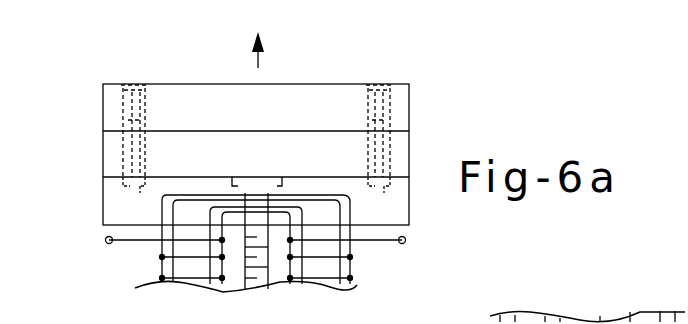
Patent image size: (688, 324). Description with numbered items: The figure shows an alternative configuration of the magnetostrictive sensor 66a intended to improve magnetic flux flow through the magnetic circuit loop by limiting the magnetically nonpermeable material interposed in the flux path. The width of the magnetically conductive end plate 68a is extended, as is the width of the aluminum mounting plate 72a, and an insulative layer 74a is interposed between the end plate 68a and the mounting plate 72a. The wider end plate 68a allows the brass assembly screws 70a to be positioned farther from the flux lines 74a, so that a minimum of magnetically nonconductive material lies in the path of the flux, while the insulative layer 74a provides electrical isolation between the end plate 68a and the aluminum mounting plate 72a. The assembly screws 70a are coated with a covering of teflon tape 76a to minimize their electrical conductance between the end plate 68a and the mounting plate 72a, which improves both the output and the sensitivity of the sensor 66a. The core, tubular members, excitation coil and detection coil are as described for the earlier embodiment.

The magnetostrictive sensor 66a is at (86, 71).
The magnetically conductive end plate 68a is at (103, 205).
The assembly screws 70a is at (138, 82).
The aluminum mounting plate 72a is at (103, 113).
The insulative layer 74a is at (103, 156).
The teflon tape 76a is at (146, 160).